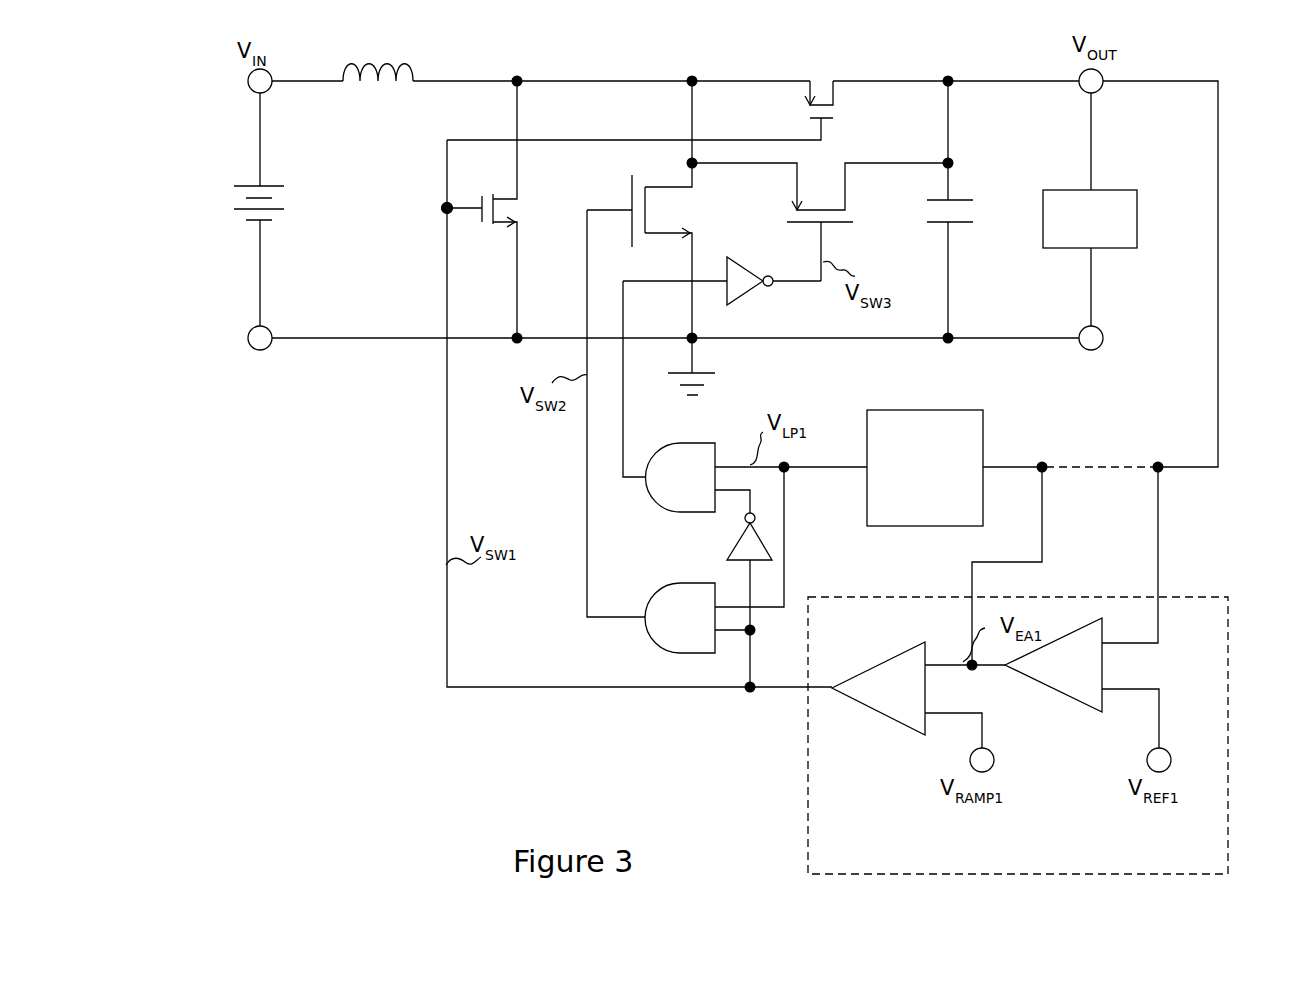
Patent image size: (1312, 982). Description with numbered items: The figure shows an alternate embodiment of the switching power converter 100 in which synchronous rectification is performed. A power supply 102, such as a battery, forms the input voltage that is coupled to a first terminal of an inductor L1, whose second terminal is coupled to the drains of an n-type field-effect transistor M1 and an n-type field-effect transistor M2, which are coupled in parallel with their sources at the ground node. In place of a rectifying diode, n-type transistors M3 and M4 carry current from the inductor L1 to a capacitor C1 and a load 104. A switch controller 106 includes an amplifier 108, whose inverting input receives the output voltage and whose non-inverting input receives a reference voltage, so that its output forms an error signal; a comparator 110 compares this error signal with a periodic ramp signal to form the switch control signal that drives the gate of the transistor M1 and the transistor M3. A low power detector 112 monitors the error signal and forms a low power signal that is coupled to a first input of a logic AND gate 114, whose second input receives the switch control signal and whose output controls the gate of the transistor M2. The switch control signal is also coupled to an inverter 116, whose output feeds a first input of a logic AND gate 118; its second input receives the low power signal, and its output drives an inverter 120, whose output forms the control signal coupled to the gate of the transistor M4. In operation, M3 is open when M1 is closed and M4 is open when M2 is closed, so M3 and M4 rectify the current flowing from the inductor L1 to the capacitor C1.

The switching power converter 100 is at (318, 493).
The power supply 102 is at (248, 183).
The load 104 is at (1113, 189).
The switch controller 106 is at (1230, 635).
The amplifier 108 is at (1097, 713).
The comparator 110 is at (882, 714).
The low power detector 112 is at (985, 427).
The logic AND gate 114 is at (652, 633).
The inverter 116 is at (733, 548).
The logic AND gate 118 is at (652, 497).
The inverter 120 is at (750, 293).
The inductor L1 is at (378, 56).
The capacitor C1 is at (958, 209).
The n-type field-effect transistor M1 is at (637, 384).
The n-type field-effect transistor M2 is at (661, 209).
The n-type transistor M3 is at (644, 92).
The n-type transistor M4 is at (820, 222).